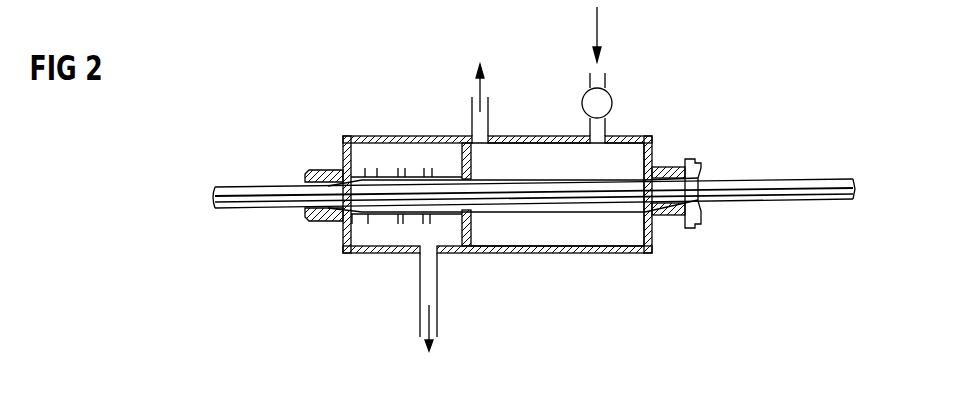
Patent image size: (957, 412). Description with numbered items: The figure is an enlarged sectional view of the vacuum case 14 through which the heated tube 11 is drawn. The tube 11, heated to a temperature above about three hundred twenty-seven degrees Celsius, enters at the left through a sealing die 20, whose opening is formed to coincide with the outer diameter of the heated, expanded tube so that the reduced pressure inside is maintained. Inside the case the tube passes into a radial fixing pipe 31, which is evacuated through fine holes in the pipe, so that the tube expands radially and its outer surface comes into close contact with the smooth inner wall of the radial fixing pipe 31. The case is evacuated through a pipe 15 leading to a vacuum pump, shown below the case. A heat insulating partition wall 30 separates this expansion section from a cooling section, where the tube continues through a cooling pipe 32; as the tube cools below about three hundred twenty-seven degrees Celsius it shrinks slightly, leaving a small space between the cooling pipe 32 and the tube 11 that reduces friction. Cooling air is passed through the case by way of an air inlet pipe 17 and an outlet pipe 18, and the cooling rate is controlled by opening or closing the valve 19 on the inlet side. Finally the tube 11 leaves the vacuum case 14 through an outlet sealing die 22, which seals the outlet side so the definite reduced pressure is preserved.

The tube 11 is at (249, 186).
The vacuum case 14 is at (387, 137).
The pipe 15 is at (432, 281).
The air inlet pipe 17 is at (606, 127).
The outlet pipe 18 is at (482, 125).
The valve 19 is at (609, 94).
The sealing die 20 is at (327, 170).
The sealing die 22 is at (662, 166).
The heat insulating partition wall 30 is at (471, 172).
The radial fixing pipe 31 is at (361, 175).
The cooling pipe 32 is at (527, 178).